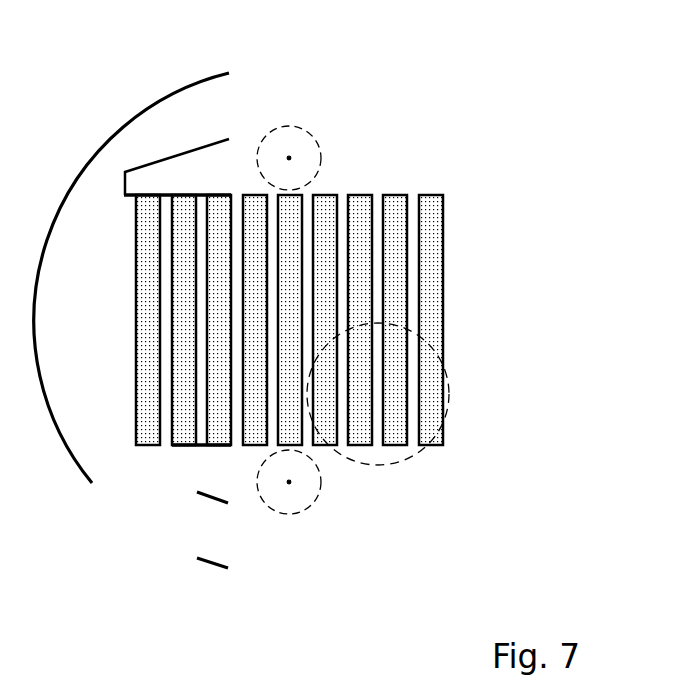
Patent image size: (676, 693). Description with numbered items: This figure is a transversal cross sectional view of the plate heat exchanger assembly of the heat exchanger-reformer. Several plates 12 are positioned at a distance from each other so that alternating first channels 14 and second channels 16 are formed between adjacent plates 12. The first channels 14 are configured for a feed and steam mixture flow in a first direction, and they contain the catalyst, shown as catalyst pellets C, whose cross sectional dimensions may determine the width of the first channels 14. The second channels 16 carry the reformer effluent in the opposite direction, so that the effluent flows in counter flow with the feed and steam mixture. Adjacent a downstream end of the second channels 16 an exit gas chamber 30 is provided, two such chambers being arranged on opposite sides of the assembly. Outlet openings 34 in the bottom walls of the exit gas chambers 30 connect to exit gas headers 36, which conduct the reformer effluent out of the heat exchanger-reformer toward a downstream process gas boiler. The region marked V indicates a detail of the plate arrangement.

The plates 12 is at (421, 257).
The first channels 14 is at (149, 430).
The second channels 16 is at (167, 429).
The exit gas chamber 30 is at (352, 162).
The outlet openings 34 is at (268, 135).
The exit gas headers 36 is at (289, 158).
The catalyst pellets C is at (396, 213).
The detail view region V is at (408, 452).